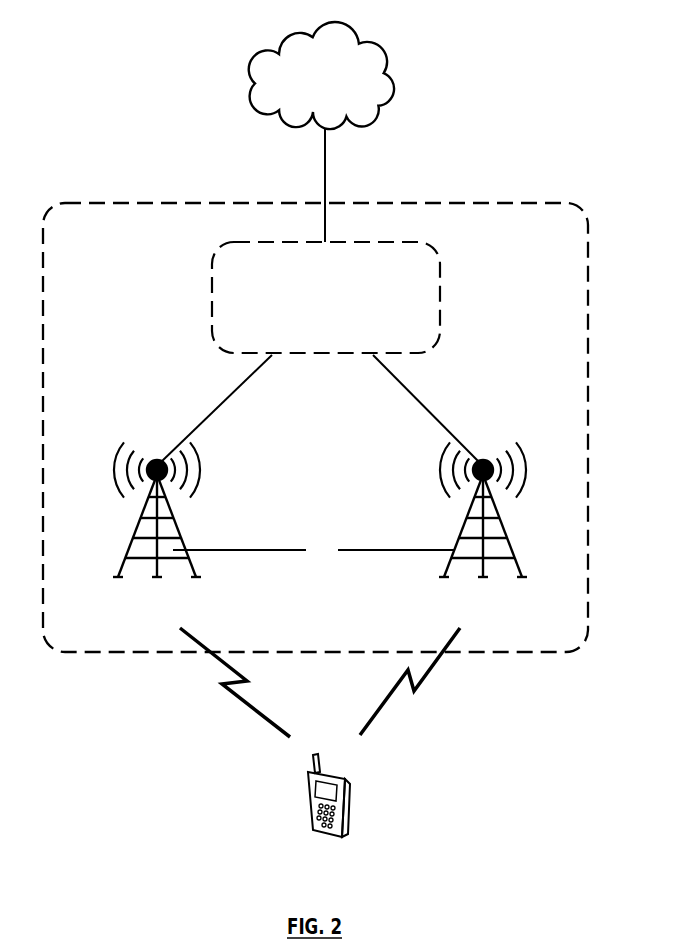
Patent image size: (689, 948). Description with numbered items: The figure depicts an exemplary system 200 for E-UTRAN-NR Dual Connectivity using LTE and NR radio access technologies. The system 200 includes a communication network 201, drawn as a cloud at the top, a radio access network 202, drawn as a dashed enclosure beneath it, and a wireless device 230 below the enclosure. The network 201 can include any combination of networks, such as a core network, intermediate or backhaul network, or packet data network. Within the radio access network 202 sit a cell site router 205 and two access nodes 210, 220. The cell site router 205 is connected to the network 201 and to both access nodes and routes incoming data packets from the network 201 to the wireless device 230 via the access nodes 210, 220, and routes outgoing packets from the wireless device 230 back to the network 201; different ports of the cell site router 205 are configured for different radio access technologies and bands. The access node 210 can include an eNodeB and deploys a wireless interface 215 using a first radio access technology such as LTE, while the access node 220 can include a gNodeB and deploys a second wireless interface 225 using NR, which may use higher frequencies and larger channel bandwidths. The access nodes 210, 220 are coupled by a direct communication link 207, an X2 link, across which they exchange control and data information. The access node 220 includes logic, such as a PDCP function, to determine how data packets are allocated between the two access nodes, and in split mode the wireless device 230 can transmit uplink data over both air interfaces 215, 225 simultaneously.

The system 200 is at (136, 42).
The communication network 201 is at (342, 91).
The radio access network 202 is at (118, 202).
The cell site router 205 is at (343, 326).
The direct communication link 207 is at (382, 550).
The access node 210 is at (135, 540).
The wireless interface 215 is at (240, 697).
The access node 220 is at (503, 543).
The second wireless interface 225 is at (418, 688).
The wireless device 230 is at (312, 826).